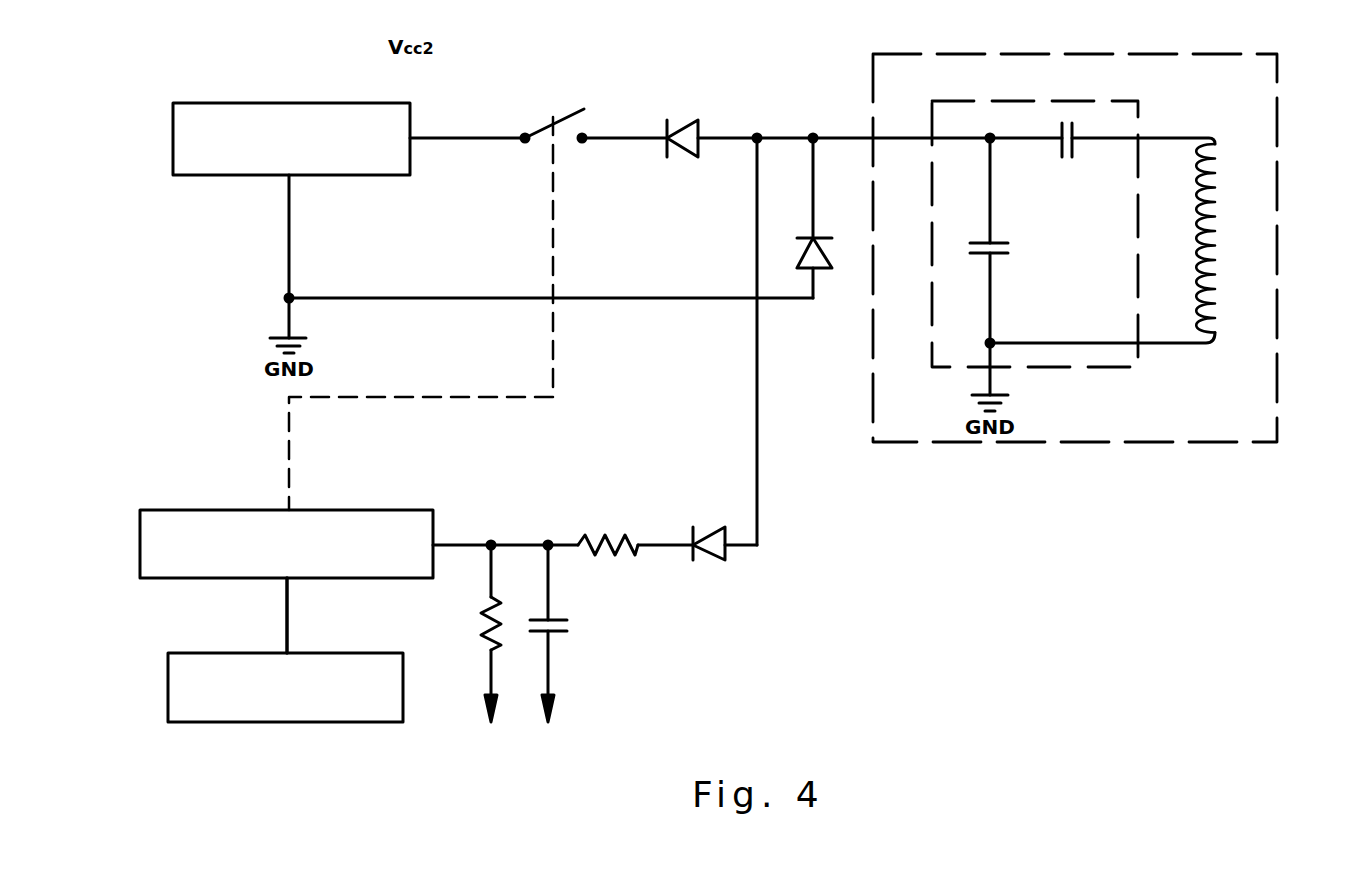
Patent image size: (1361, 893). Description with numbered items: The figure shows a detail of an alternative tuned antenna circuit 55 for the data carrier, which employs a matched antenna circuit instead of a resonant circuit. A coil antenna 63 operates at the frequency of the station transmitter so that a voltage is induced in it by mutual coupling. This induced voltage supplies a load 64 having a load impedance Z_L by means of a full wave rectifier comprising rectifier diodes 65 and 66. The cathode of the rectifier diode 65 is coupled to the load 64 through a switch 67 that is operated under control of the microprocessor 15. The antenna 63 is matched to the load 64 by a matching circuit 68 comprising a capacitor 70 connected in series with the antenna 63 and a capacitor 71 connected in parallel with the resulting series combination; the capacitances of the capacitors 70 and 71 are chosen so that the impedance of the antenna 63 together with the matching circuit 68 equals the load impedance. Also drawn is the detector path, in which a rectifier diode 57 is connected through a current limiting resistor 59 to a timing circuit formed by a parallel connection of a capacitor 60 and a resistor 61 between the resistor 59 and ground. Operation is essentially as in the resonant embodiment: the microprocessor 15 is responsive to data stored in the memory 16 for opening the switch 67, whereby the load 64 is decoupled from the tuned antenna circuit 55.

The load 64 is at (286, 102).
The switch 67 is at (556, 118).
The rectifier diode 65 is at (678, 120).
The rectifier diode 66 is at (824, 270).
The coil antenna 63 is at (1218, 241).
The capacitor 70 is at (1072, 160).
The capacitor 71 is at (1010, 253).
The matching circuit 68 is at (1048, 369).
The tuned antenna circuit 55 is at (1104, 444).
The microprocessor 15 is at (258, 509).
The memory 16 is at (260, 652).
The current limiting resistor 59 is at (615, 534).
The rectifier diode 57 is at (706, 526).
The resistor 61 is at (482, 622).
The capacitor 60 is at (568, 620).